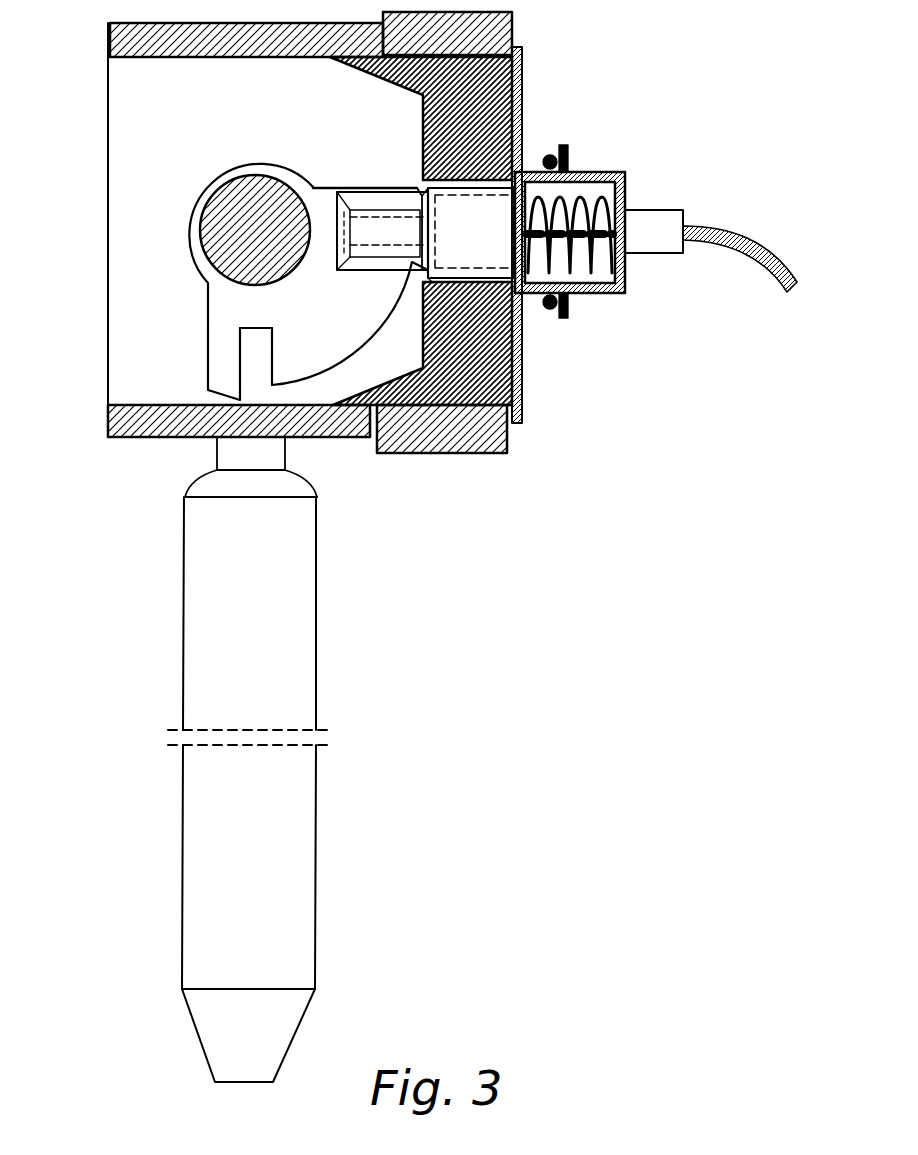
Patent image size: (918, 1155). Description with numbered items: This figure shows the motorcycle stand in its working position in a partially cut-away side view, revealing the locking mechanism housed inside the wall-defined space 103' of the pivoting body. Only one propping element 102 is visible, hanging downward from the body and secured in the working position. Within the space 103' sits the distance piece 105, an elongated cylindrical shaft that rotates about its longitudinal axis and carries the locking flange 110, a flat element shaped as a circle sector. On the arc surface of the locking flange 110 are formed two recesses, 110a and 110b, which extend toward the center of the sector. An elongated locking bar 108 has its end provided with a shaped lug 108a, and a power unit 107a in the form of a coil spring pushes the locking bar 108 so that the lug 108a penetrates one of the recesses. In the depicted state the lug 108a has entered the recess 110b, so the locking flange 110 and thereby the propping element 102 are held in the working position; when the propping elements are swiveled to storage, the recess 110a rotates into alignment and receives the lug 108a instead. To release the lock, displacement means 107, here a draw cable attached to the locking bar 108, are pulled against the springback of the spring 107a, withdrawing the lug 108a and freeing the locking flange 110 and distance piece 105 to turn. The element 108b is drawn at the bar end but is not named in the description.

The propping element 102 is at (268, 907).
The wall-defined space 103' is at (315, 232).
The distance piece 105 is at (223, 253).
The displacement means 107 is at (760, 243).
The power unit 107a is at (570, 263).
The locking bar 108 is at (508, 265).
The lug 108a is at (410, 262).
The plunger 108b is at (353, 195).
The locking flange 110 is at (315, 348).
The recess 110a is at (243, 345).
The recess 110b is at (373, 215).